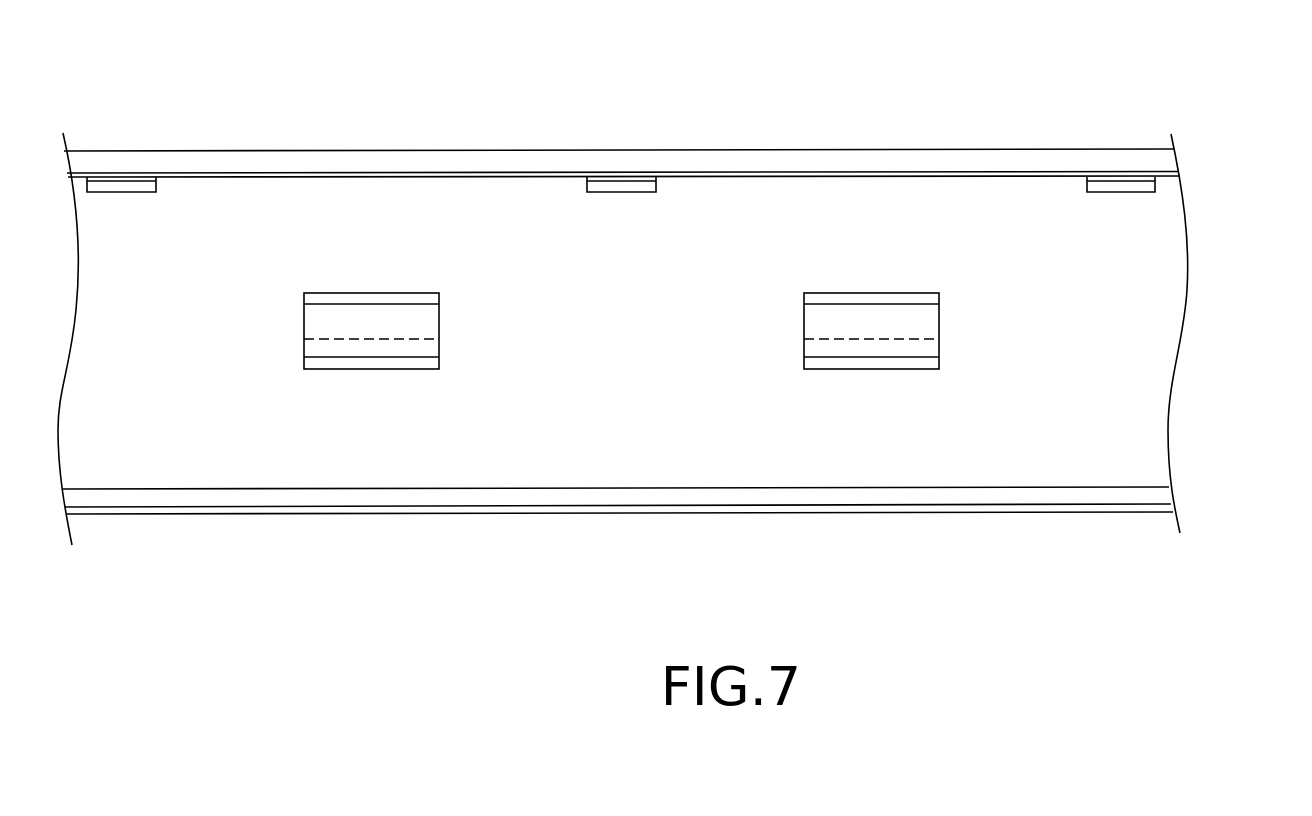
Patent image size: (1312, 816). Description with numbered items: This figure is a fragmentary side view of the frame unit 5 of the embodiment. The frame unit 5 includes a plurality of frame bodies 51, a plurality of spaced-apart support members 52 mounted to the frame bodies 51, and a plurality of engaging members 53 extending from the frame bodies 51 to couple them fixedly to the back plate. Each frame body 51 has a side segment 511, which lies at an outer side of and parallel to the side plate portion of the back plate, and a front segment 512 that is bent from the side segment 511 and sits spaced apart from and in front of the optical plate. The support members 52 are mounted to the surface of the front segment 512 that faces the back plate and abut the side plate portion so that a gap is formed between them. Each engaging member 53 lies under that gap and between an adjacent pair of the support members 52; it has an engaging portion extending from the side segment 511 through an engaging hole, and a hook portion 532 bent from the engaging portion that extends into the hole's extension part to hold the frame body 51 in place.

The frame unit 5 is at (676, 279).
The frame body 51 is at (676, 279).
The side segment 511 is at (1145, 387).
The front segment 512 is at (534, 149).
The support member 52 is at (125, 193).
The engaging member 53 is at (613, 347).
The hook portion 532 is at (370, 312).